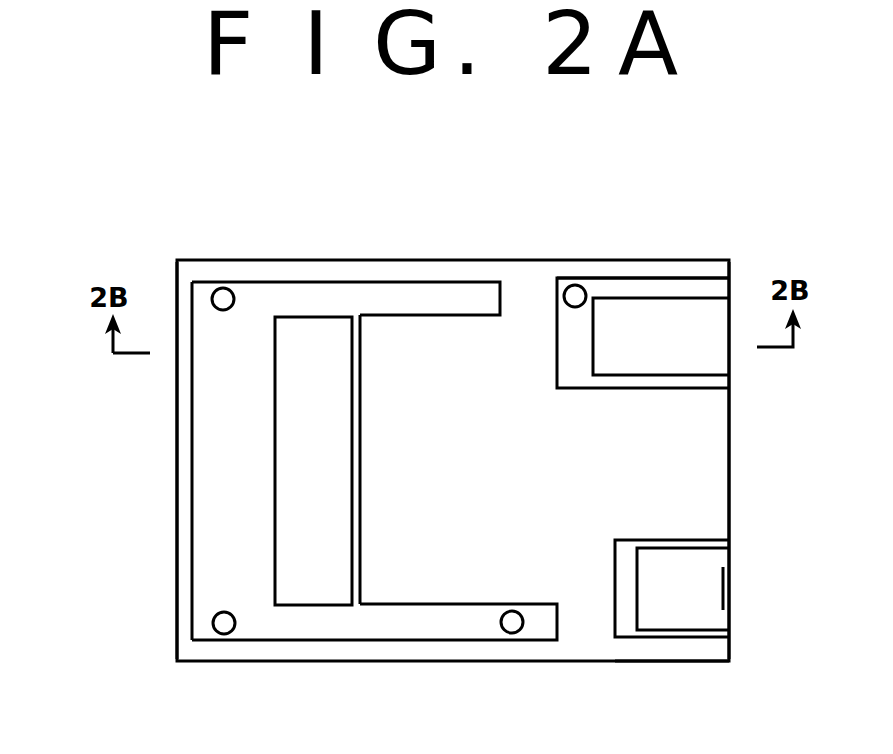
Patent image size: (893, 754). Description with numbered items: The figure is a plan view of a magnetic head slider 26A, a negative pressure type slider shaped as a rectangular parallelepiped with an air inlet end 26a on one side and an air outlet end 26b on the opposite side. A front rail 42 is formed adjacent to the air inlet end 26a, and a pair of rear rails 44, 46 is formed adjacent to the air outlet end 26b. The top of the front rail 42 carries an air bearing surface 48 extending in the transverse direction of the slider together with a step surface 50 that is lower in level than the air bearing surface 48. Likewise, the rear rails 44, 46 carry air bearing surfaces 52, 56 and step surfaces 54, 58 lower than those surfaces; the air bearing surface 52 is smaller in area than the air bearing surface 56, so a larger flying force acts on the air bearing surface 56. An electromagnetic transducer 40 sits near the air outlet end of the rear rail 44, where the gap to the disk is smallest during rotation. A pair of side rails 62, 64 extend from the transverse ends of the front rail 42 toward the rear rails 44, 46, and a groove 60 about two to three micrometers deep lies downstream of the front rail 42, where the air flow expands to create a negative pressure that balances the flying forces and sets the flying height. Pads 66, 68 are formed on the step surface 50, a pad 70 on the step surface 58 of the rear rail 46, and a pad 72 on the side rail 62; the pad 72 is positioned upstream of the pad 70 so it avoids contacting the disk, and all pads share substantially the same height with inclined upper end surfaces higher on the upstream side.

The magnetic head slider 26A is at (464, 254).
The air inlet end 26a is at (177, 423).
The air outlet end 26b is at (730, 450).
The electromagnetic transducer 40 is at (727, 588).
The front rail 42 is at (192, 487).
The rear rail 44 is at (673, 641).
The rear rail 46 is at (655, 278).
The air bearing surface 48 is at (303, 332).
The step surface 50 is at (212, 530).
The air bearing surface 52 is at (670, 555).
The step surface 54 is at (623, 585).
The air bearing surface 56 is at (655, 355).
The step surface 58 is at (567, 347).
The groove 60 is at (478, 468).
The side rail 62 is at (392, 641).
The side rail 64 is at (415, 280).
The pad 66 is at (224, 623).
The pad 68 is at (222, 298).
The pad 70 is at (575, 296).
The pad 72 is at (512, 622).